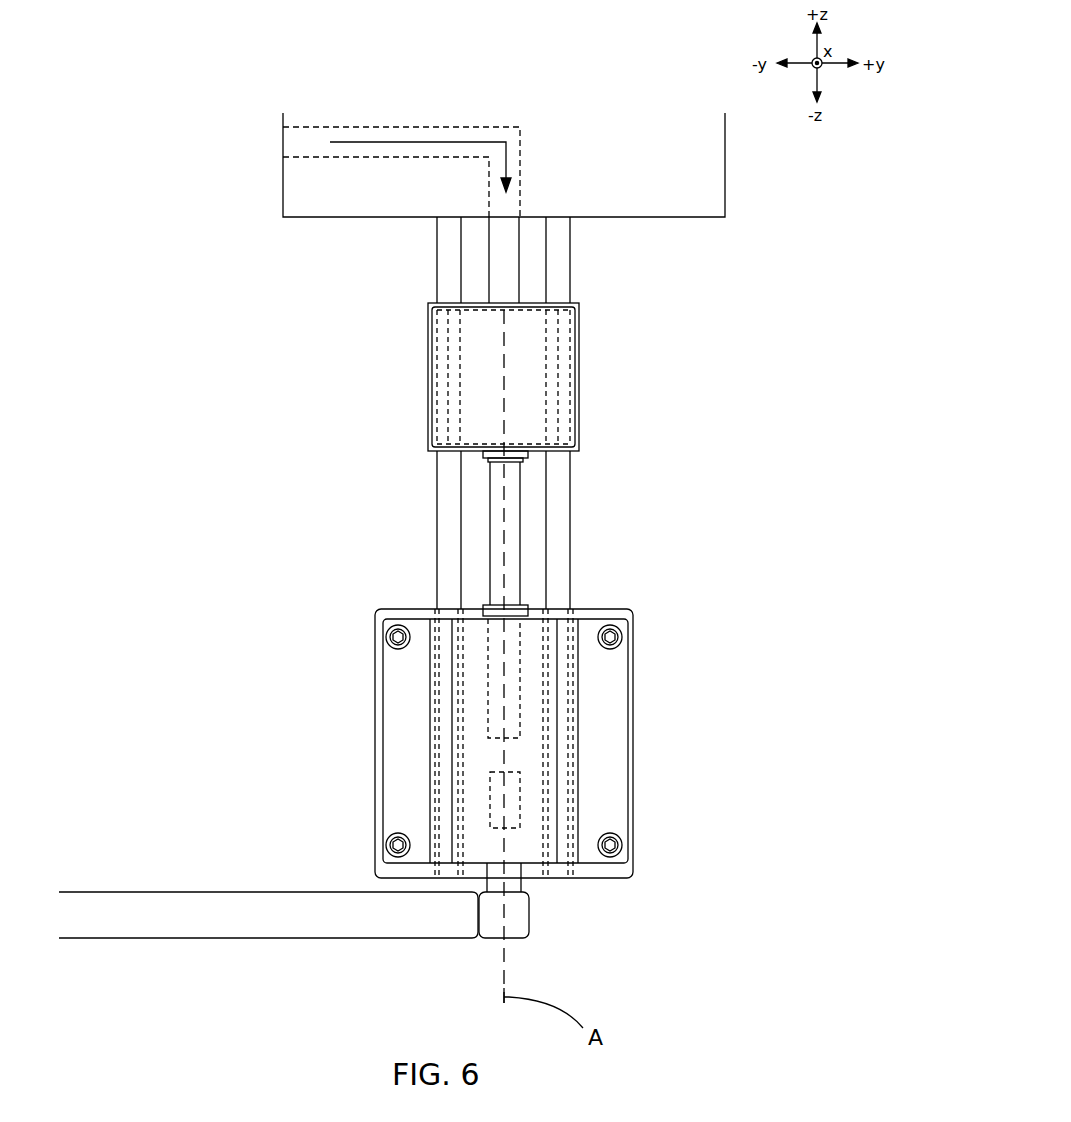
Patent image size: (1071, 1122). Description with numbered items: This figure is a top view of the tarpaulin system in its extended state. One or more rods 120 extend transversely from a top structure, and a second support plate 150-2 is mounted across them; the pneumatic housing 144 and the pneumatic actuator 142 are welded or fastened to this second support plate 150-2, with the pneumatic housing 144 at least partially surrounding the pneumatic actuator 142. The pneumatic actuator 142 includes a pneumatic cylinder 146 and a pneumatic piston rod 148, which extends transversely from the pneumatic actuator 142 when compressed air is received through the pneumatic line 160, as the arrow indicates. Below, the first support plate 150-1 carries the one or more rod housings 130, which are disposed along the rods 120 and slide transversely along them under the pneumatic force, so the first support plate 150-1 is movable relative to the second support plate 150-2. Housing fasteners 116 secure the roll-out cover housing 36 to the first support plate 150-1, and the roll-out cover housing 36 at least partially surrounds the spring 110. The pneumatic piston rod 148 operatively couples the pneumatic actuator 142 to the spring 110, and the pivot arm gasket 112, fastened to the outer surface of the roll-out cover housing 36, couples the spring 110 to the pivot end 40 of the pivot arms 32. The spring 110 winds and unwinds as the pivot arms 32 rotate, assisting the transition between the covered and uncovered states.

The pneumatic line 160 is at (507, 250).
The rods 120 is at (437, 242).
The second support plate 150-2 is at (428, 331).
The pneumatic housing 144 is at (428, 382).
The pneumatic actuator 142 is at (555, 358).
The pneumatic cylinder 146 is at (523, 392).
The pneumatic piston rod 148 is at (515, 497).
The first support plate 150-1 is at (375, 622).
The housing fasteners 116 is at (386, 638).
The rod housings 130 is at (430, 777).
The spring 110 is at (507, 787).
The roll-out cover housing 36 is at (533, 829).
The pivot arm gasket 112 is at (517, 882).
The pivot end 40 is at (508, 928).
The pivot arms 32 is at (143, 922).